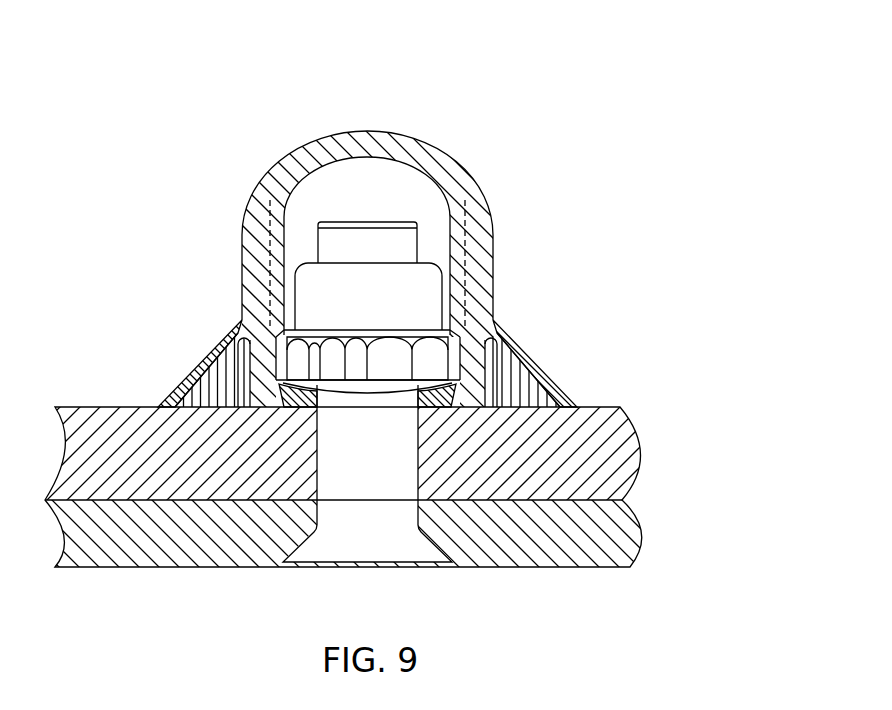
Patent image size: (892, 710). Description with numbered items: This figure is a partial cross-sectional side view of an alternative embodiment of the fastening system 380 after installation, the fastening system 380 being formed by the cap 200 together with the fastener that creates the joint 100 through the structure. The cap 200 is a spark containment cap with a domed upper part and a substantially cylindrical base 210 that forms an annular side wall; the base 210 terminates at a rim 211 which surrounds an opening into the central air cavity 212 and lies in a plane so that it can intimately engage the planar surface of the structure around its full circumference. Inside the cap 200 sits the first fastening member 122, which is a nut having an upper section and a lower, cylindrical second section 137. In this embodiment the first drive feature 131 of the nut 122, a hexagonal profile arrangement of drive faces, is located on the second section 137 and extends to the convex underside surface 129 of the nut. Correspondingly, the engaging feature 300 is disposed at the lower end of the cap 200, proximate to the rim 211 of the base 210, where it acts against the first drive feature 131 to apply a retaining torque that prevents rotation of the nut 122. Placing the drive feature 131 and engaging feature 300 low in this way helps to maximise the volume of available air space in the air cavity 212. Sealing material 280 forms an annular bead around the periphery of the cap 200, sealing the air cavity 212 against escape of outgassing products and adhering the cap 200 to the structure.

The joint 100 is at (583, 127).
The cap 200 is at (370, 140).
The air cavity 212 is at (412, 187).
The first fastening member 122 is at (420, 294).
The engaging feature 300 is at (472, 329).
The second section 137 is at (300, 362).
The sealing material 280 is at (212, 388).
The fastening system 380 is at (203, 242).
The first drive feature 131 is at (433, 362).
The base 210 is at (465, 362).
The rim 211 is at (455, 381).
The underside surface 129 is at (278, 381).